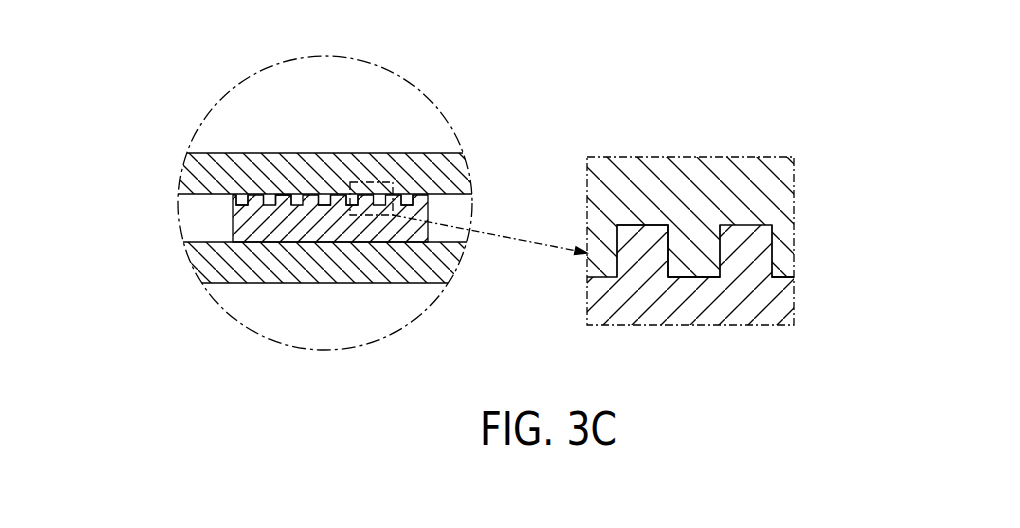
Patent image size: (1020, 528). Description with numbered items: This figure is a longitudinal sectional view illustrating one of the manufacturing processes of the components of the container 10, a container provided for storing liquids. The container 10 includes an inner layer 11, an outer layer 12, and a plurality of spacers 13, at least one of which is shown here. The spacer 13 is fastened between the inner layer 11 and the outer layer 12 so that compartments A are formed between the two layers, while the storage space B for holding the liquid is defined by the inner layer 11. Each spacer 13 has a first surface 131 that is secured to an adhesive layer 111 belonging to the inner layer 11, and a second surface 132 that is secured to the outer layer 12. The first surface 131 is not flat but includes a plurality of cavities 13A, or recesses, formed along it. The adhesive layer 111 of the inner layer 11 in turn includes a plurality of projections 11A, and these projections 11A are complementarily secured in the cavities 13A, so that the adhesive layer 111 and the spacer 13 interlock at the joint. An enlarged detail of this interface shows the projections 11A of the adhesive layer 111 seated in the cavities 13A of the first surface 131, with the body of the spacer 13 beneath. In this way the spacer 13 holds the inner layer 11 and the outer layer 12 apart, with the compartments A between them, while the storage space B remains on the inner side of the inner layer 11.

The container 10 is at (476, 214).
The inner layer 11 is at (457, 169).
The adhesive layer 111 is at (203, 170).
The projections 11A is at (288, 196).
The outer layer 12 is at (210, 262).
The spacer 13 is at (235, 227).
The first surface 131 is at (322, 197).
The second surface 132 is at (330, 197).
The cavities 13A is at (268, 197).
The compartments A is at (200, 208).
The storage space B is at (380, 108).